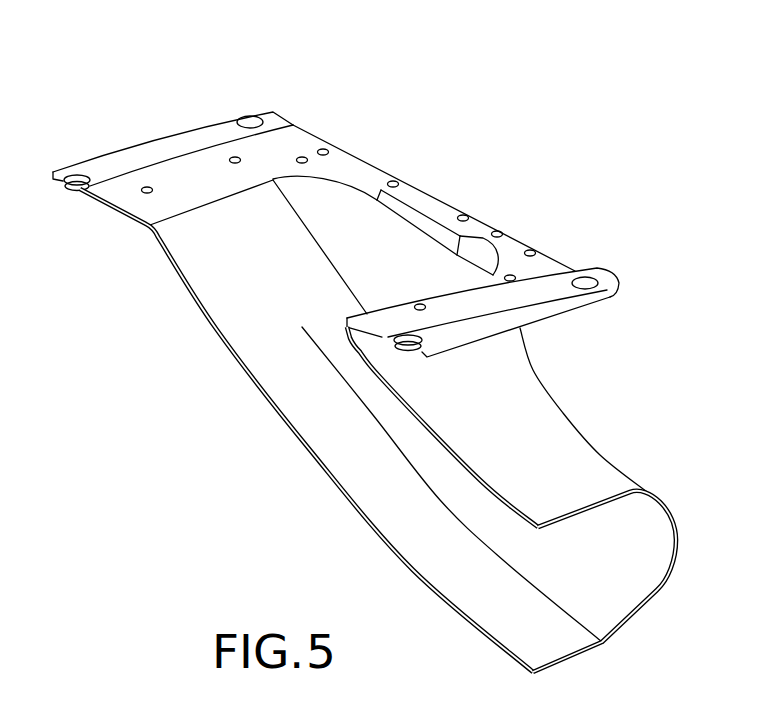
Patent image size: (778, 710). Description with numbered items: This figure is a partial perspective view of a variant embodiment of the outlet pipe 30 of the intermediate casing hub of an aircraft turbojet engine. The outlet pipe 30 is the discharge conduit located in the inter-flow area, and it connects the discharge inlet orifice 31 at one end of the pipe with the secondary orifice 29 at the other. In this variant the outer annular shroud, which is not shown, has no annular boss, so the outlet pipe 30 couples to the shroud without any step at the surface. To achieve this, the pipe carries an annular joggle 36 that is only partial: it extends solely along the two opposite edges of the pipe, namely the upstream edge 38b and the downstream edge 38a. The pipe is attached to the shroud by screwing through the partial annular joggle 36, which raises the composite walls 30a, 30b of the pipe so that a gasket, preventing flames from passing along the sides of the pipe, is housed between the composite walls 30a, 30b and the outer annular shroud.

The secondary orifice 29 is at (337, 223).
The outlet pipe 30 is at (390, 426).
The composite wall 30a is at (173, 270).
The composite wall 30b is at (497, 400).
The discharge inlet orifice 31 is at (612, 577).
The partial annular joggle 36 is at (163, 147).
The downstream edge 38a is at (210, 133).
The upstream edge 38b is at (558, 289).